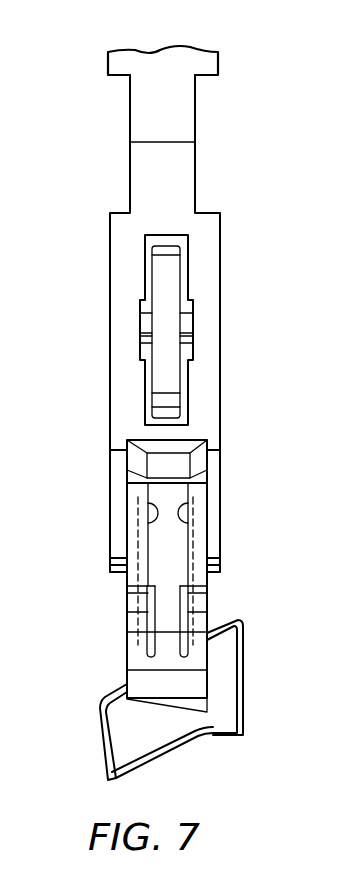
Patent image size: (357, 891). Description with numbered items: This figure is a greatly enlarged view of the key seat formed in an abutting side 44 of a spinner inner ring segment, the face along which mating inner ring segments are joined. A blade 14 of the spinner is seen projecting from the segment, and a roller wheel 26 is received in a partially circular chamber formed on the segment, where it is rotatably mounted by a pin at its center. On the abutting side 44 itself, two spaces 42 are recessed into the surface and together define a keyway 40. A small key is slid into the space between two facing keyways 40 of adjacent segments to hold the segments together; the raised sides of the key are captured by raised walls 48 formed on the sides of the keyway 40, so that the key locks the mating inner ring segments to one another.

The blade 14 is at (207, 637).
The roller wheel 26 is at (162, 265).
The keyway 40 is at (165, 602).
The space 42 is at (162, 547).
The abutting side 44 is at (168, 142).
The raised wall 48 is at (145, 497).